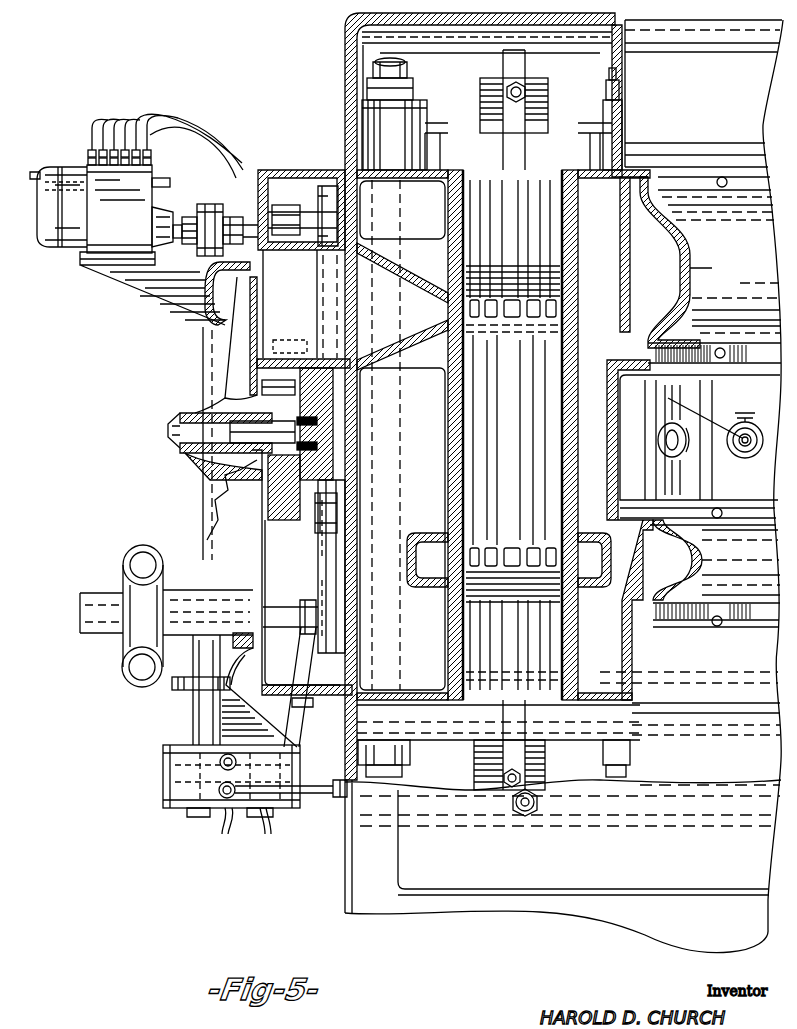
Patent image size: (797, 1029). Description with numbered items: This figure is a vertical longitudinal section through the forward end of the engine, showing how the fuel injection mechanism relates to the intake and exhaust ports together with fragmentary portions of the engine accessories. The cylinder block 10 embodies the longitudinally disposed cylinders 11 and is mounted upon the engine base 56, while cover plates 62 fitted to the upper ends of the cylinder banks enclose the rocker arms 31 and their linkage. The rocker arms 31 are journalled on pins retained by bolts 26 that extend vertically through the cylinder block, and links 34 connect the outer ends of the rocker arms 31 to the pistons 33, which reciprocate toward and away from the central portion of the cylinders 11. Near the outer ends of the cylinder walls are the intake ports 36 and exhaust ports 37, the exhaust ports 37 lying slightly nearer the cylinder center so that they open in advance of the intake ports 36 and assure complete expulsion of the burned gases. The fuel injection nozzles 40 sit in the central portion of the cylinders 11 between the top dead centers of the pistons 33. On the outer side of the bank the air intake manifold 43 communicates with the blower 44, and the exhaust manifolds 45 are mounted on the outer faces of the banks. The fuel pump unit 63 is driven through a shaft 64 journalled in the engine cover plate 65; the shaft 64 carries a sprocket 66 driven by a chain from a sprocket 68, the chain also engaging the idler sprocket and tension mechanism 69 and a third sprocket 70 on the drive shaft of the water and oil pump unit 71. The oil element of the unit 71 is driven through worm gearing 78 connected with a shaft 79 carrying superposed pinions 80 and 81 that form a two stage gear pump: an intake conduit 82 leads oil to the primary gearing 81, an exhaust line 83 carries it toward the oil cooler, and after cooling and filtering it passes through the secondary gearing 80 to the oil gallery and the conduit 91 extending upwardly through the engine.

The cylinder block 10 is at (564, 471).
The cylinders 11 is at (509, 440).
The bolts 26 is at (408, 76).
The rocker arms 31 is at (548, 100).
The pistons 33 is at (513, 435).
The links 34 is at (514, 420).
The intake ports 36 is at (566, 311).
The exhaust ports 37 is at (612, 572).
The fuel injection nozzles 40 is at (745, 460).
The air intake manifold 43 is at (710, 270).
The blower 44 is at (240, 378).
The exhaust manifolds 45 is at (716, 573).
The engine base 56 is at (452, 910).
The cover plates 62 is at (703, 103).
The pump unit 63 is at (136, 183).
The shaft 64 is at (192, 214).
The engine cover plate 65 is at (264, 558).
The sprocket 66 is at (322, 205).
The sprocket 68 is at (360, 375).
The idler sprocket and tension mechanism 69 is at (322, 536).
The third sprocket 70 is at (318, 647).
The water and oil pump unit 71 is at (193, 712).
The worm gearing 78 is at (184, 592).
The shaft 79 is at (185, 662).
The pinion 80 is at (166, 763).
The pinion 81 is at (166, 792).
The intake conduit 82 is at (312, 797).
The exhaust line 83 is at (222, 830).
The conduit 91 is at (298, 724).